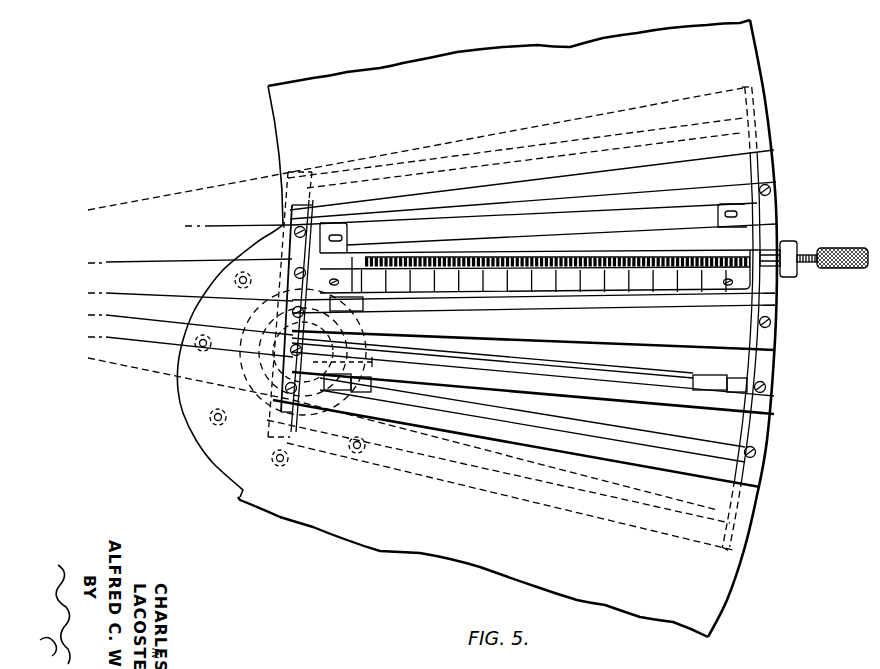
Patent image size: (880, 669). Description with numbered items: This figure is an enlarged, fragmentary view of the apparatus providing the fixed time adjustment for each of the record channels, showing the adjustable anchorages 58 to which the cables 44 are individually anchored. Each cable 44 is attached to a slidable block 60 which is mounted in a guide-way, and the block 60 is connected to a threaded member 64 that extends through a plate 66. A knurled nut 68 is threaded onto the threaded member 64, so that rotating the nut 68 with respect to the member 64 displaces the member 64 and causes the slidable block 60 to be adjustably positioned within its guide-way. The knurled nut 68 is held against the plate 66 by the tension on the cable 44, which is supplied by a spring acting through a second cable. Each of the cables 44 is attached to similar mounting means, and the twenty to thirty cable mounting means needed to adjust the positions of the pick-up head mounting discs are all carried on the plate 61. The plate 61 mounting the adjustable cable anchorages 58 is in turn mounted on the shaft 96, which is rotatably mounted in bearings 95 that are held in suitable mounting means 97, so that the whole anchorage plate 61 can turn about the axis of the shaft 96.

The cable 44 is at (149, 263).
The adjustable anchorage 58 is at (417, 502).
The slidable block 60 is at (341, 258).
The plate 61 is at (517, 107).
The threaded member 64 is at (808, 256).
The plate 66 is at (757, 243).
The knurled nut 68 is at (788, 276).
The bearings 95 is at (252, 389).
The shaft 96 is at (358, 374).
The mounting means 97 is at (247, 328).